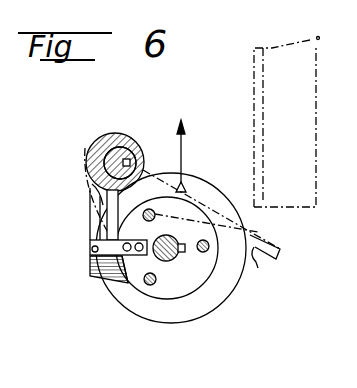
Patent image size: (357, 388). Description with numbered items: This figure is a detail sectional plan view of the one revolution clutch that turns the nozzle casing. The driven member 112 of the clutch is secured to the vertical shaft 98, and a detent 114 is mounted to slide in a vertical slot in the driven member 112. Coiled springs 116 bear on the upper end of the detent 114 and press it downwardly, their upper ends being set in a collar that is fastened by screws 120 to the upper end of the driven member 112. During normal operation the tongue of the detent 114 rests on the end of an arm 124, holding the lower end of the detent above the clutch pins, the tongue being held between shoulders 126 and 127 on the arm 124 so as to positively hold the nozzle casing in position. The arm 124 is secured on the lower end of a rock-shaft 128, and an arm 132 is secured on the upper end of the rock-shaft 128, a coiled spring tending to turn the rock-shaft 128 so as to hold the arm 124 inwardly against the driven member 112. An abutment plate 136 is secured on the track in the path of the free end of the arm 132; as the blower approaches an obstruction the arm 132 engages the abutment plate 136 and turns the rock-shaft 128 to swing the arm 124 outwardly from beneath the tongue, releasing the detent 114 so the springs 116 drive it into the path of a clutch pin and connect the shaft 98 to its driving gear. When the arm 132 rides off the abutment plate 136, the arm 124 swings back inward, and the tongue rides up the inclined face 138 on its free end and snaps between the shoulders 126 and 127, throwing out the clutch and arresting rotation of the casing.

The vertical shaft 98 is at (174, 261).
The driven member 112 is at (212, 311).
The detent 114 is at (90, 241).
The coiled springs 116 is at (143, 295).
The screws 120 is at (151, 286).
The arm 124 is at (96, 168).
The shoulder 126 is at (92, 249).
The shoulder 127 is at (104, 238).
The rock-shaft 128 is at (104, 141).
The arm 132 is at (258, 268).
The abutment plate 136 is at (242, 134).
The inclined face 138 is at (110, 284).